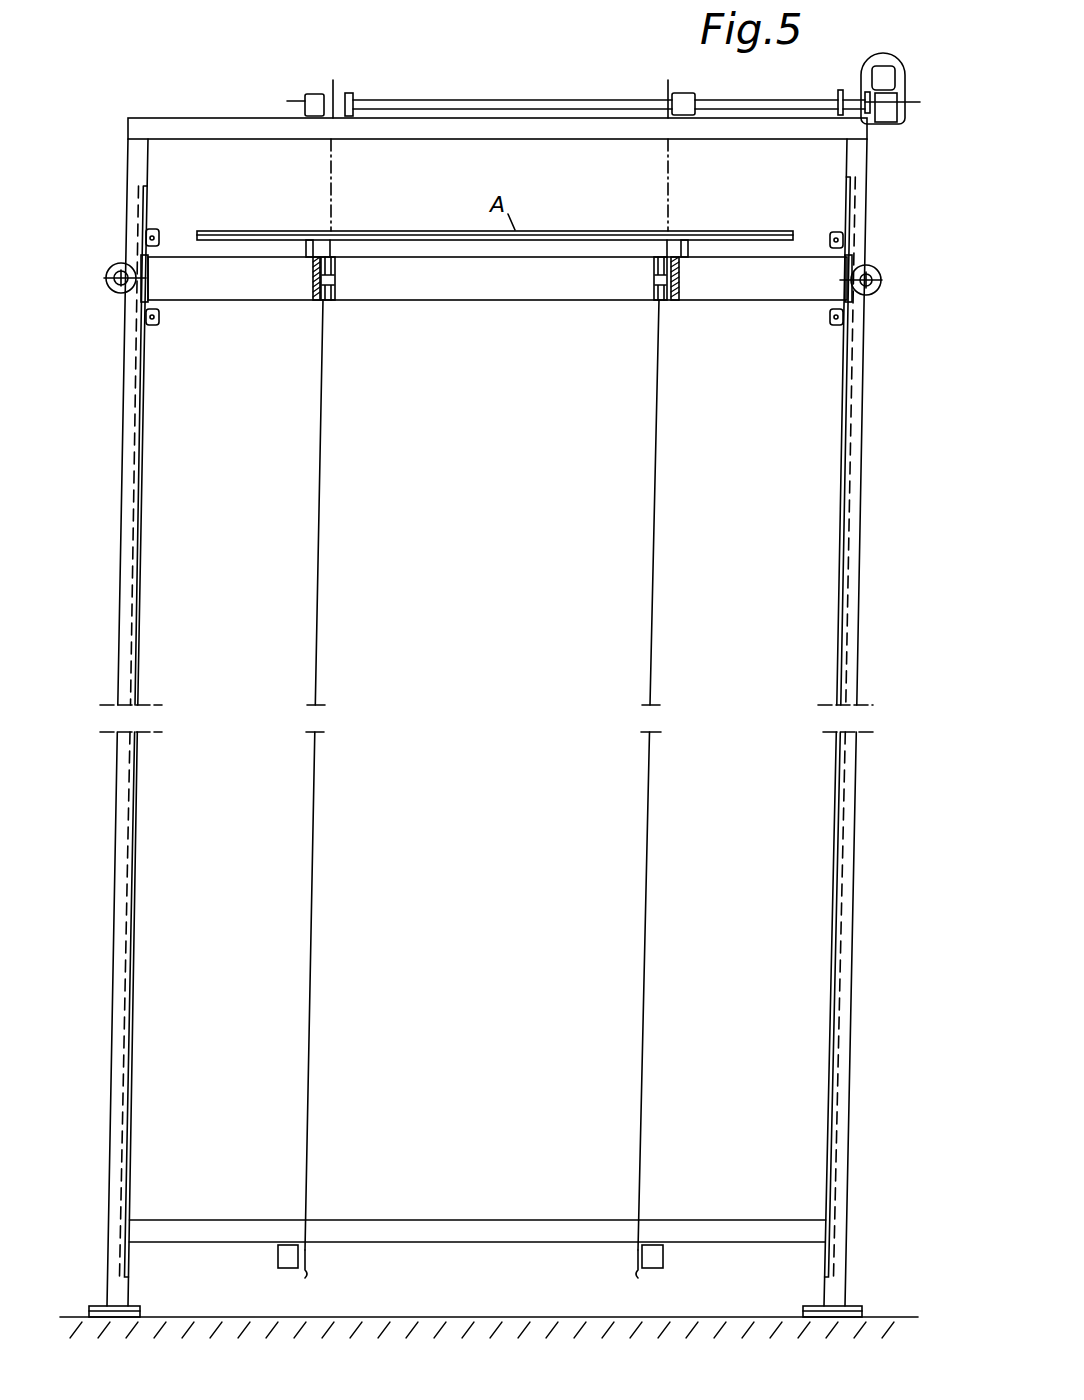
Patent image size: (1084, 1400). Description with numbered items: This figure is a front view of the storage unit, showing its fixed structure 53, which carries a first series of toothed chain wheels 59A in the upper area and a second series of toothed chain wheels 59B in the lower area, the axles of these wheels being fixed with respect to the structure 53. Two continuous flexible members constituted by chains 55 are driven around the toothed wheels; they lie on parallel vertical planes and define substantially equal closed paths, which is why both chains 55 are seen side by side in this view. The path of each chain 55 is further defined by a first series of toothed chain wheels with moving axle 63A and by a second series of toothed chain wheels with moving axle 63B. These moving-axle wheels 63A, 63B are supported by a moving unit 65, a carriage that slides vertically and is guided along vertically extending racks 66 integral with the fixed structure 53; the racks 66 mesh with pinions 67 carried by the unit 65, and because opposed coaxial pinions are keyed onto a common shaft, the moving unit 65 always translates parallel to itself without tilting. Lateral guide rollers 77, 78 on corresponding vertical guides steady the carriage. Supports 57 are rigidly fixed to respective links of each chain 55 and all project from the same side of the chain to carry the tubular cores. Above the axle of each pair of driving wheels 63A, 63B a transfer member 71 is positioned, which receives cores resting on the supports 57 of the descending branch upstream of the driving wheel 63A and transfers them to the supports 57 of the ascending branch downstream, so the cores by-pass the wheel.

The fixed structure 53 is at (495, 139).
The chain 55 is at (318, 625).
The support 57 is at (333, 85).
The upper toothed chain wheel 59A is at (314, 120).
The lower toothed chain wheel 59B is at (296, 1270).
The toothed chain wheel with moving axle 63A is at (332, 300).
The toothed chain wheel with moving axle 63B is at (315, 300).
The moving unit 65 is at (545, 300).
The rack 66 is at (142, 438).
The pinion 67 is at (118, 292).
The transfer member 71 is at (305, 252).
The lateral guide roller 77 is at (157, 326).
The lateral guide roller 78 is at (152, 262).